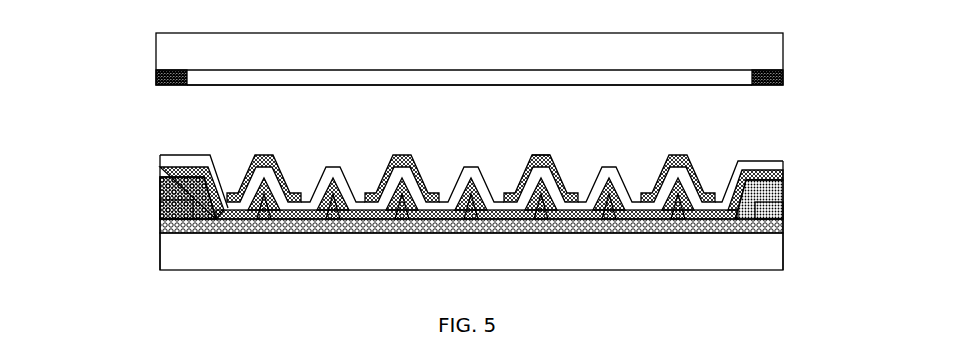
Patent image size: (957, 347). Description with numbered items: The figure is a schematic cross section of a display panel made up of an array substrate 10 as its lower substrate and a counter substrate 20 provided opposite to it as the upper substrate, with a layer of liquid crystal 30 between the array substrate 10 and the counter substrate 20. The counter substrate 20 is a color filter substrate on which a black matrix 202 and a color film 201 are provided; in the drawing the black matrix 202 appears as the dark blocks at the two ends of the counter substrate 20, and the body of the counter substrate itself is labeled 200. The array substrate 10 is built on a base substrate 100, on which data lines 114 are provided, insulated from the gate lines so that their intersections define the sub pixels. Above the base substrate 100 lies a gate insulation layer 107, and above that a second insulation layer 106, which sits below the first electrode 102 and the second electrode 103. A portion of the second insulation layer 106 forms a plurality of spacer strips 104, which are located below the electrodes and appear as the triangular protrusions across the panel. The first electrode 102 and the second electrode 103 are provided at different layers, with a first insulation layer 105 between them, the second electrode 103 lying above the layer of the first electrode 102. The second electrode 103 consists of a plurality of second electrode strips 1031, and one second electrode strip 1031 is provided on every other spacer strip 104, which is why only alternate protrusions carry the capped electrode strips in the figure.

The array substrate 10 is at (158, 222).
The counter substrate 20 is at (153, 64).
The liquid crystal 30 is at (222, 123).
The base substrate 100 is at (758, 248).
The first electrode 102 is at (773, 173).
The second electrode 103 is at (690, 163).
The second electrode strip 1031 is at (550, 159).
The spacer strip 104 is at (681, 208).
The first insulation layer 105 is at (772, 163).
The second insulation layer 106 is at (778, 190).
The gate insulation layer 107 is at (783, 228).
The data line 114 is at (783, 209).
The cover plate 200 is at (765, 54).
The color film 201 is at (225, 77).
The black matrix 202 is at (783, 80).